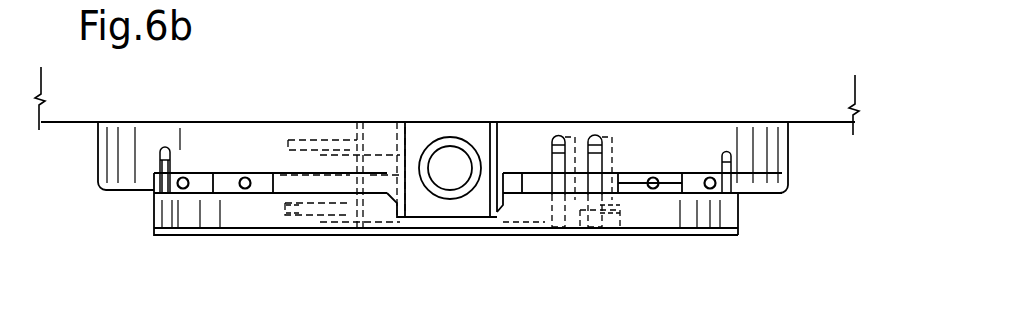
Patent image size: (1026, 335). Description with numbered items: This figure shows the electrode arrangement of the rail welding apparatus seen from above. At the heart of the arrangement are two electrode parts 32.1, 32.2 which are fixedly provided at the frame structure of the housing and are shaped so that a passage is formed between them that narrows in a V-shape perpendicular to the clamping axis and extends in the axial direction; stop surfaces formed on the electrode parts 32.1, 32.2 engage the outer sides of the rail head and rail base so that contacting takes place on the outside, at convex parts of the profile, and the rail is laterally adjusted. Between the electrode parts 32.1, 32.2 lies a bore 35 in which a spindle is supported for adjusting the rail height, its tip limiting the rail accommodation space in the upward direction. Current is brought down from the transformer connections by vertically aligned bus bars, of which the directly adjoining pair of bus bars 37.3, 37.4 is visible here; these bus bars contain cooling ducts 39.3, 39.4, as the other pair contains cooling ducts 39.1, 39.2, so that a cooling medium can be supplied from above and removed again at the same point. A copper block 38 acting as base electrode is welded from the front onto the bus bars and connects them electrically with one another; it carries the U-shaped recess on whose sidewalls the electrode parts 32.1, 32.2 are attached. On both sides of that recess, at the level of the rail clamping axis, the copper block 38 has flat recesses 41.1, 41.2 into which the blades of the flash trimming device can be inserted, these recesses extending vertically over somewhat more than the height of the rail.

The bore 35 is at (452, 165).
The electrode part 32.1 is at (328, 183).
The electrode part 32.2 is at (528, 167).
The bus bar 37.3 is at (628, 183).
The bus bar 37.4 is at (690, 183).
The copper block 38 is at (700, 236).
The cooling duct 39.1 is at (186, 193).
The cooling duct 39.2 is at (243, 193).
The cooling duct 39.3 is at (655, 193).
The cooling duct 39.4 is at (738, 198).
The flat recess 41.1 is at (296, 226).
The flat recess 41.2 is at (618, 209).